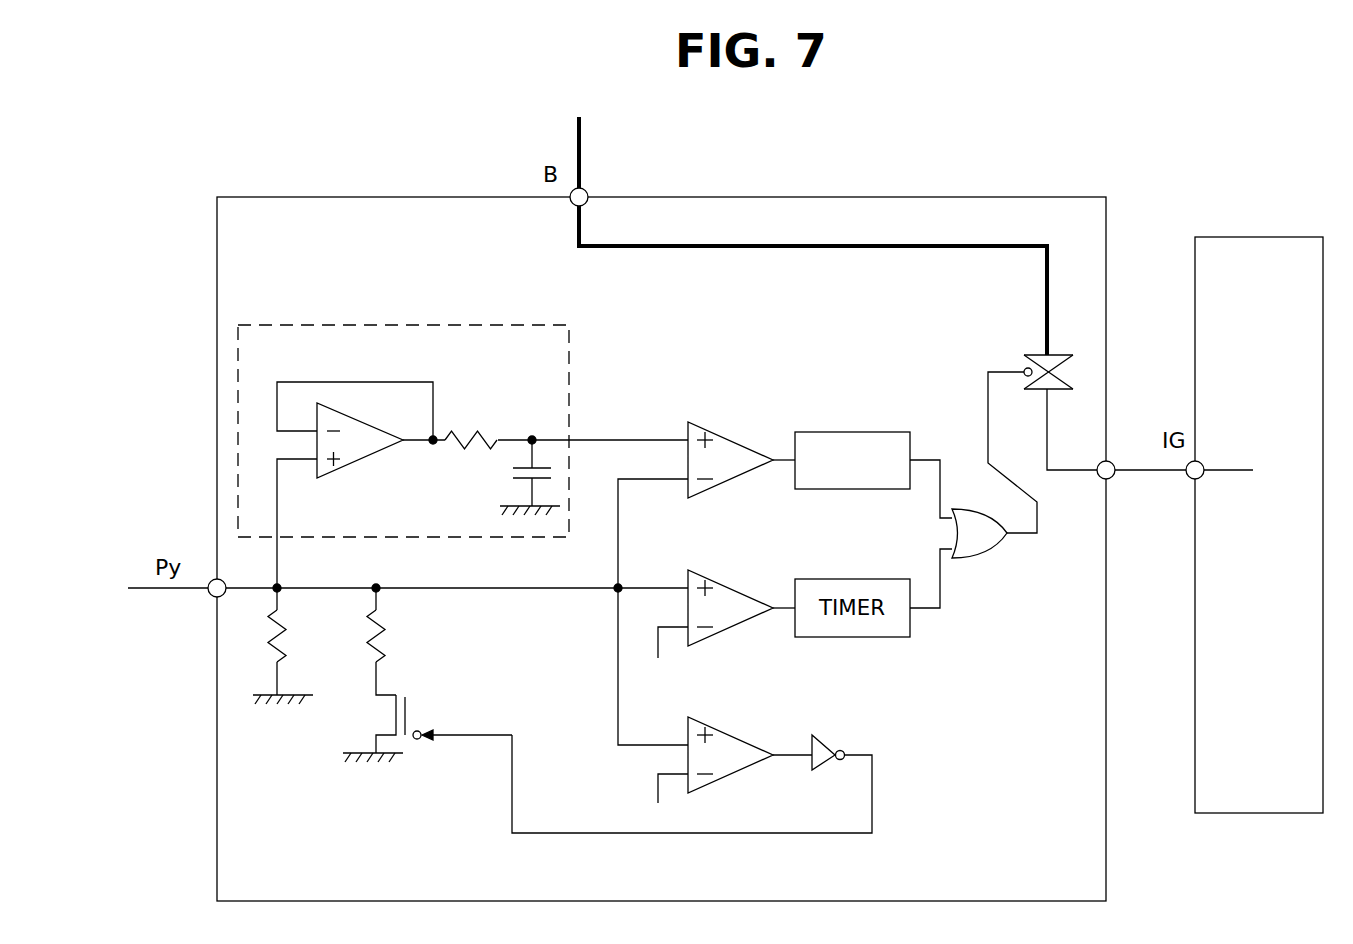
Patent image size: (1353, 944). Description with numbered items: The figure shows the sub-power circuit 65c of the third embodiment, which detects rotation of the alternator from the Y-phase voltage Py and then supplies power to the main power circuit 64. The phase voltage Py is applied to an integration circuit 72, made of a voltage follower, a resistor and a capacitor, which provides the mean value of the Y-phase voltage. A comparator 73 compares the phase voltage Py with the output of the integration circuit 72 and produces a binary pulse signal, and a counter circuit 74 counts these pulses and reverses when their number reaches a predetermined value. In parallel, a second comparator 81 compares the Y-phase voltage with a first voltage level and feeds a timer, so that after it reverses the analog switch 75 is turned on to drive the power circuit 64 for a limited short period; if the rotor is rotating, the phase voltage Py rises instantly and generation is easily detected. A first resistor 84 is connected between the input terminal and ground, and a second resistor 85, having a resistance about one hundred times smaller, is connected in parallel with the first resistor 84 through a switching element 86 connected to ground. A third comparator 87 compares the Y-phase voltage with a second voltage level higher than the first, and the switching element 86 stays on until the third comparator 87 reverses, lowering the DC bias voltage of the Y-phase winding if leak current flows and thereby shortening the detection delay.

The main power circuit 64 is at (1248, 237).
The sub-power circuit 65c is at (878, 197).
The integration circuit 72 is at (445, 323).
The comparator 73 is at (741, 444).
The counter circuit 74 is at (871, 432).
The analog switch 75 is at (1062, 355).
The second comparator 81 is at (741, 593).
The first resistor 84 is at (268, 627).
The second resistor 85 is at (397, 618).
The switching element 86 is at (390, 717).
The third comparator 87 is at (737, 739).